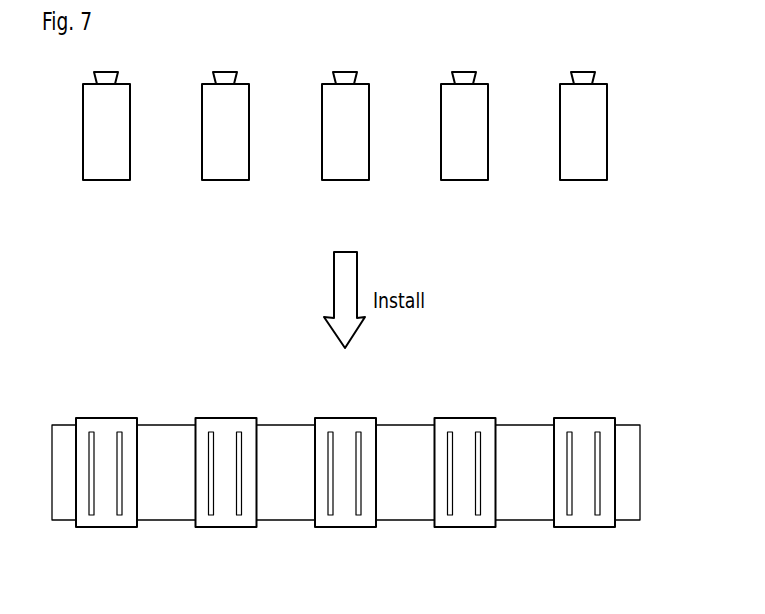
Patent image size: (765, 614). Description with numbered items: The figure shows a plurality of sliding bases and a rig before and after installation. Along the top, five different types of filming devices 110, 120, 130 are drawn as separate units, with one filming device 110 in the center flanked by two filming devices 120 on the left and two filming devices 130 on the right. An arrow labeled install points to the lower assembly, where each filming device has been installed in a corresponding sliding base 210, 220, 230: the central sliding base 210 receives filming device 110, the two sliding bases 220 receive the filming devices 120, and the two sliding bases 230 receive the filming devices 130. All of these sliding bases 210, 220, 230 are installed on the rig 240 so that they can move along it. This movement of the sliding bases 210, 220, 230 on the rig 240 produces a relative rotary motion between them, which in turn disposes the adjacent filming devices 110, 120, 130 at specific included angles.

The filming device 110 is at (345, 180).
The filming device 120 is at (106, 180).
The filming device 130 is at (464, 180).
The sliding base 210 is at (346, 527).
The sliding base 220 is at (107, 527).
The sliding base 230 is at (466, 527).
The rig 240 is at (409, 430).